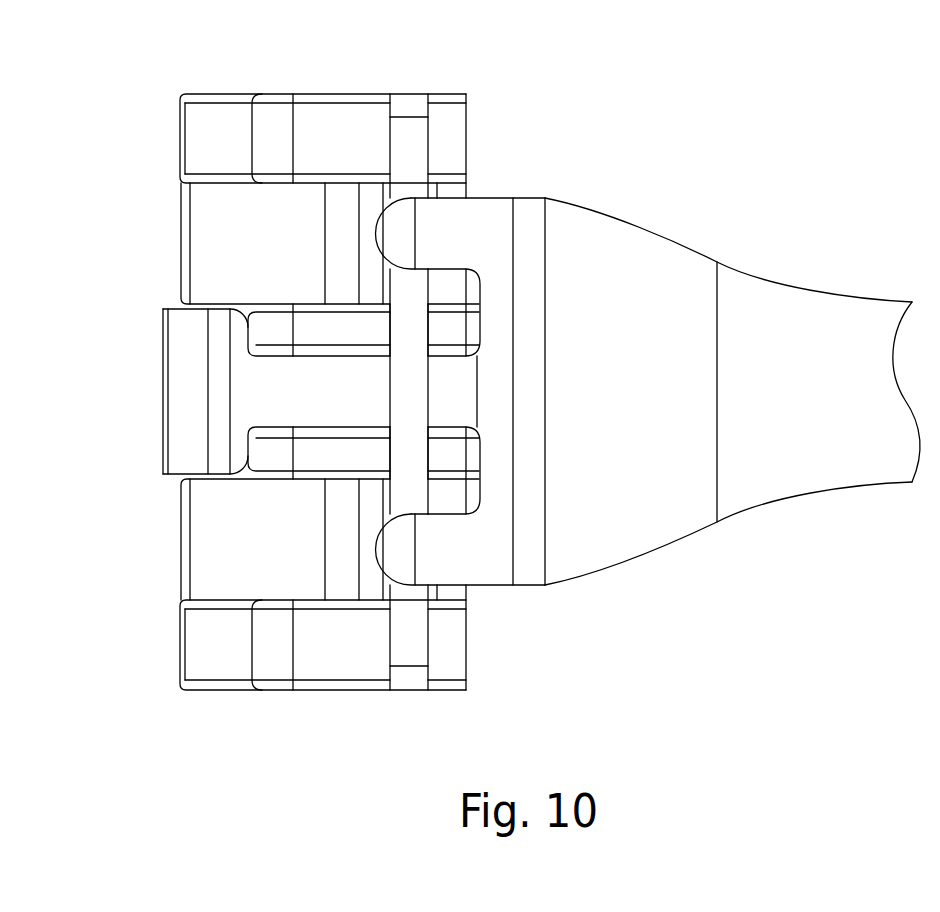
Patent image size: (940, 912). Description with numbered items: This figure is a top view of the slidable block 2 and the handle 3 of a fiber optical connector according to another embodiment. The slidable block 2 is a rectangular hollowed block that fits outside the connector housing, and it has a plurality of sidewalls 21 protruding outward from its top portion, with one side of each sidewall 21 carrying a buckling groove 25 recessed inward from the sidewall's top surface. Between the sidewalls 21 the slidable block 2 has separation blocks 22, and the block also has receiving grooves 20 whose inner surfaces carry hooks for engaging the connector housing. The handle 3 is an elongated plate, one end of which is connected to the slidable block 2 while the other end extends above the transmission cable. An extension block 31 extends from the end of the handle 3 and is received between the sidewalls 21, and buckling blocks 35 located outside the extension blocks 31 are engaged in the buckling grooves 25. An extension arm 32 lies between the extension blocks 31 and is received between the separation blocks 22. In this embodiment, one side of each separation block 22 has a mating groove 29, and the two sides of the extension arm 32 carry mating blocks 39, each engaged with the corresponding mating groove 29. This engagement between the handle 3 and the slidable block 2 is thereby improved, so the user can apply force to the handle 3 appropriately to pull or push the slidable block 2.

The slidable block 2 is at (178, 125).
The handle 3 is at (813, 295).
The receiving groove 20 is at (235, 212).
The sidewall 21 is at (345, 657).
The separation block 22 is at (300, 325).
The buckling groove 25 is at (421, 103).
The mating groove 29 is at (392, 330).
The extension block 31 is at (455, 225).
The extension arm 32 is at (298, 393).
The buckling block 35 is at (412, 130).
The mating block 39 is at (407, 298).